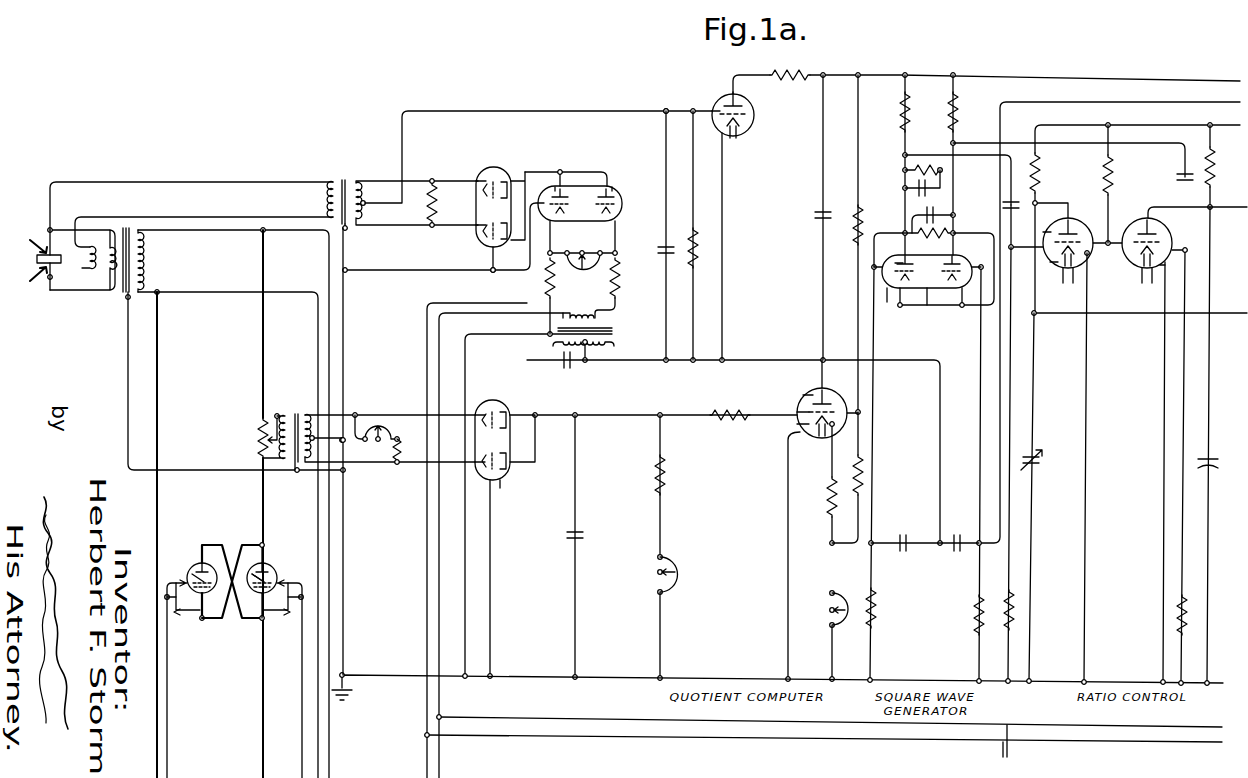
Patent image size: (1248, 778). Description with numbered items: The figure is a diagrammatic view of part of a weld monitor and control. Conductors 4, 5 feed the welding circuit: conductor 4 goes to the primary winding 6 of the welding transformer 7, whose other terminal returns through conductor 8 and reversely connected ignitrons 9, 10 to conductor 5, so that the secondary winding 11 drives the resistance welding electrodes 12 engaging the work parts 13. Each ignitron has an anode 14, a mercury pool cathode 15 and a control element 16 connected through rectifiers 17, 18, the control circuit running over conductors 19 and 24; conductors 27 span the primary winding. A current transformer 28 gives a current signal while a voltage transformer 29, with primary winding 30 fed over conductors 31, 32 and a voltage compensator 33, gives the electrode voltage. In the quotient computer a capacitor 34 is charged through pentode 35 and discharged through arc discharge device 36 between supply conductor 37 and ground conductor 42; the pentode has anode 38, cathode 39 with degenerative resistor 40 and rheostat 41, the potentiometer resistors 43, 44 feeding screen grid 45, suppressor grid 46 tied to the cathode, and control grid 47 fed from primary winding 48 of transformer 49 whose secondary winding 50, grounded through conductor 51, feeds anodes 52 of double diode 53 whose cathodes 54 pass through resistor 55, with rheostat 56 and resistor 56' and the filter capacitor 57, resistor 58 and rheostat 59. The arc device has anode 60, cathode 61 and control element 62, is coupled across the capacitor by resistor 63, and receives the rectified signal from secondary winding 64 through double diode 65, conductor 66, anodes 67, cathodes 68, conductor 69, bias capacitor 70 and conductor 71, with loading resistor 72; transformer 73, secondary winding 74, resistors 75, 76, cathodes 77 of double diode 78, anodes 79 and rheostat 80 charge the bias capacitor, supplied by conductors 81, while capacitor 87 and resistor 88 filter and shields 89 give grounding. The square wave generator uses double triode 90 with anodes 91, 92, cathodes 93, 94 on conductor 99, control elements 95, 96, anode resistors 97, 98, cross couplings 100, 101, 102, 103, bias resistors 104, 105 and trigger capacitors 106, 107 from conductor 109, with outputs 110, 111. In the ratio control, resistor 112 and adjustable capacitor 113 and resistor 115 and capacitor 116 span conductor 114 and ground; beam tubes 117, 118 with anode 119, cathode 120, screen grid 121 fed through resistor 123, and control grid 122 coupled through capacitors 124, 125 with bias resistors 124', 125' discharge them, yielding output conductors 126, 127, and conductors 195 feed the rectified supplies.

The conductor 4 is at (157, 357).
The conductor 5 is at (263, 702).
The primary winding 6 is at (146, 260).
The welding transformer 7 is at (121, 294).
The conductor 8 is at (263, 357).
The electric discharge device 9 is at (197, 563).
The electric discharge device 10 is at (239, 576).
The secondary winding 11 is at (110, 269).
The resistance welding electrodes 12 is at (27, 256).
The work parts 13 is at (36, 259).
The anode 14 is at (271, 566).
The mercury pool cathode 15 is at (252, 605).
The control element 16 is at (275, 573).
The rectifier 17 is at (234, 607).
The rectifier 18 is at (174, 582).
The conductor 19 is at (302, 684).
The conductor 24 is at (167, 687).
The conductors 27 is at (296, 246).
The current transformer 28 is at (258, 434).
The voltage transformer 29 is at (339, 179).
The primary winding 30 is at (325, 199).
The conductor 31 is at (193, 182).
The conductor 32 is at (213, 217).
The voltage compensator 33 is at (86, 250).
The capacitor 34 is at (813, 217).
The electric discharge device 35 is at (818, 388).
The arc discharge device 36 is at (754, 123).
The direct current supply conductor 37 is at (846, 75).
The anode 38 is at (826, 388).
The cathode 39 is at (805, 440).
The degenerative resistor 40 is at (827, 498).
The rheostat 41 is at (836, 591).
The direct current supply conductor 42 is at (713, 677).
The resistor 43 is at (852, 458).
The resistor 44 is at (853, 238).
The screen grid 45 is at (797, 406).
The suppressor grid 46 is at (805, 393).
The control grid 47 is at (795, 425).
The primary winding 48 is at (283, 412).
The transformer 49 is at (296, 412).
The secondary winding 50 is at (306, 413).
The conductor 51 is at (343, 515).
The anodes 52 is at (480, 401).
The double diode 53 is at (492, 400).
The cathodes 54 is at (508, 401).
The resistor 55 is at (721, 418).
The rheostat 56 is at (387, 428).
The resistor 56' is at (371, 453).
The capacitor 57 is at (585, 536).
The resistor 58 is at (665, 478).
The rheostat 59 is at (675, 556).
The anode 60 is at (726, 95).
The cathode 61 is at (740, 138).
The control element 62 is at (715, 102).
The current limiting resistor 63 is at (795, 78).
The secondary winding 64 is at (362, 191).
The double diode 65 is at (505, 167).
The conductor 66 is at (528, 110).
The anodes 67 is at (478, 178).
The cathodes 68 is at (490, 168).
The conductor 69 is at (515, 336).
The capacitor 70 is at (567, 365).
The conductor 71 is at (676, 363).
The loading resistor 72 is at (428, 209).
The transformer 73 is at (612, 322).
The secondary winding 74 is at (607, 345).
The resistor 75 is at (555, 278).
The resistor 76 is at (622, 278).
The cathodes 77 is at (622, 201).
The double diode 78 is at (581, 172).
The anodes 79 is at (553, 189).
The rheostat 80 is at (582, 249).
The conductors 81 is at (439, 762).
The capacitor 87 is at (658, 250).
The resistor 88 is at (695, 258).
The shields 89 is at (129, 300).
The double triode 90 is at (927, 305).
The anode 91 is at (897, 246).
The anode 92 is at (962, 258).
The cathode 93 is at (884, 304).
The cathode 94 is at (960, 306).
The control element 95 is at (890, 257).
The control element 96 is at (967, 286).
The anode resistor 97 is at (903, 110).
The anode resistor 98 is at (952, 102).
The direct current supply conductor 99 is at (1136, 102).
The capacitor 100 is at (950, 207).
The resistor 101 is at (954, 232).
The capacitor 102 is at (905, 190).
The resistor 103 is at (905, 169).
The biasing resistor 104 is at (974, 615).
The biasing resistor 105 is at (878, 607).
The capacitor 106 is at (903, 540).
The capacitor 107 is at (959, 540).
The conductor 109 is at (906, 362).
The output circuit 110 is at (927, 155).
The output circuit 111 is at (1012, 141).
The resistor 112 is at (1040, 158).
The adjustable capacitor 113 is at (1040, 461).
The direct current supply conductor 114 is at (1146, 125).
The resistor 115 is at (1208, 150).
The capacitor 116 is at (1198, 470).
The electric discharge device 117 is at (1088, 268).
The electric discharge device 118 is at (1124, 268).
The anode 119 is at (1072, 223).
The cathode 120 is at (1095, 286).
The screen grid 121 is at (1045, 219).
The control grid 122 is at (1099, 473).
The resistor 123 is at (1103, 175).
The coupling capacitor 124 is at (1005, 225).
The bias resistor 124' is at (994, 465).
The coupling capacitor 125 is at (1168, 175).
The bias resistor 125' is at (1193, 625).
The output conductor 126 is at (1222, 313).
The output conductor 127 is at (1224, 207).
The conductors 195 is at (1005, 750).